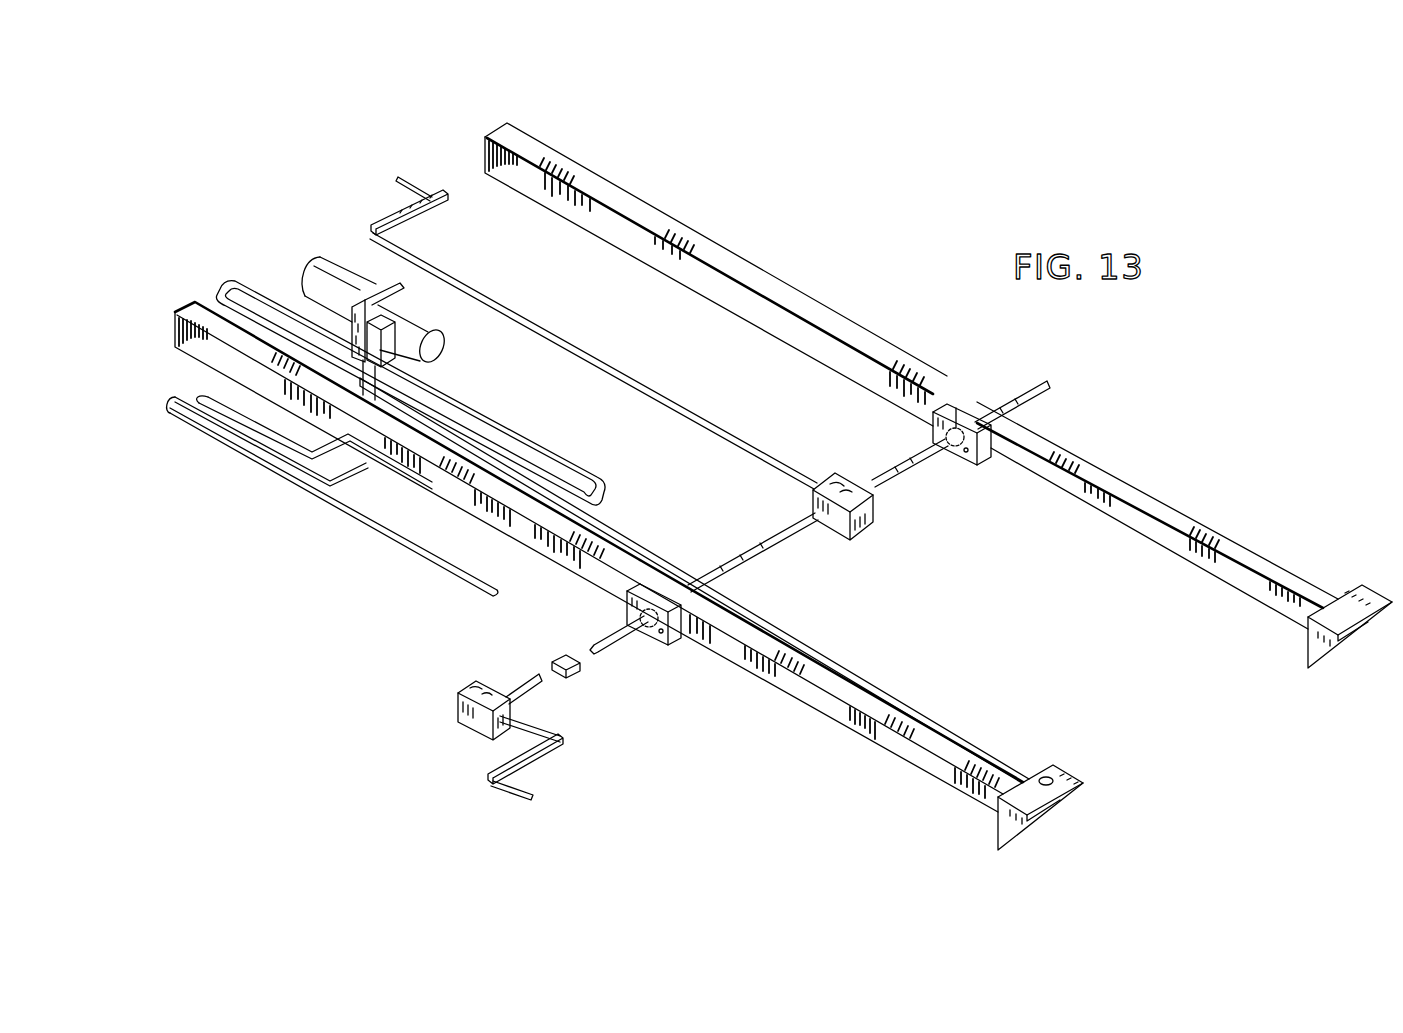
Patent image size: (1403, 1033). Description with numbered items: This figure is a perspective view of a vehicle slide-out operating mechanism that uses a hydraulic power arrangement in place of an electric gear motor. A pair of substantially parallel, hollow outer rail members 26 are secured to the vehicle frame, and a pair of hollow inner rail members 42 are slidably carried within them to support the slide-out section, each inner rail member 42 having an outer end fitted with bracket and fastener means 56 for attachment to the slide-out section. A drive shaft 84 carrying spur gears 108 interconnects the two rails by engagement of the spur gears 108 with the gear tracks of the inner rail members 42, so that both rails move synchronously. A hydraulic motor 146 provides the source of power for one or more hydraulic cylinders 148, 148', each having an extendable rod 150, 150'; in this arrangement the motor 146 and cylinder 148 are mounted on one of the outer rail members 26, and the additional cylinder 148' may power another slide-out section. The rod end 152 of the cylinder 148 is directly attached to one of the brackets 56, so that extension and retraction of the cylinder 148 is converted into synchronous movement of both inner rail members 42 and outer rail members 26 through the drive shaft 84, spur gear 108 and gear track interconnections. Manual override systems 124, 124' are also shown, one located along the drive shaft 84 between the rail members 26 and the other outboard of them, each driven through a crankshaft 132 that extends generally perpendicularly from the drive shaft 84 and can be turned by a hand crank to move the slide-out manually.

The outer rail member 26 is at (813, 296).
The inner rail member 42 is at (1245, 548).
The bracket and fastener means 56 is at (1310, 668).
The drive shaft 84 is at (917, 478).
The spur gear 108 is at (958, 458).
The manual override system 124 is at (844, 547).
The manual override system 124' is at (515, 713).
The crankshaft 132 is at (683, 400).
The hydraulic motor 146 is at (317, 262).
The hydraulic cylinder 148 is at (391, 369).
The hydraulic cylinder 148' is at (299, 477).
The extendable rod 150 is at (694, 580).
The extendable rod 150' is at (334, 518).
The rod end 152 is at (1050, 782).